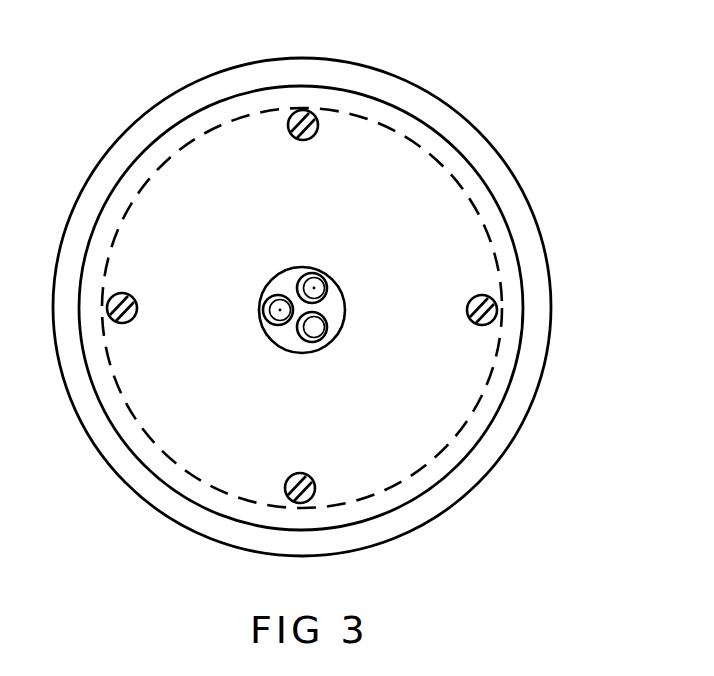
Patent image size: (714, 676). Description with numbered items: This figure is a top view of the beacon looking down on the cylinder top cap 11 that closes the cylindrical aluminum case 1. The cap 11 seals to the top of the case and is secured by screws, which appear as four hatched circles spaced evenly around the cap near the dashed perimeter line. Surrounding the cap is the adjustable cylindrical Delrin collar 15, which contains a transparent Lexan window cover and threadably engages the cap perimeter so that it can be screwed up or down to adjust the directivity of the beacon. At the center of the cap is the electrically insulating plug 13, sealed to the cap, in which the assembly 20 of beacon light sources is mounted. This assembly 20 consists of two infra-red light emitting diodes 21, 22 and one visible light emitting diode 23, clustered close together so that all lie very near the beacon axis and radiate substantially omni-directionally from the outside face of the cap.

The cylindrical aluminum case 1 is at (497, 272).
The cylinder top cap 11 is at (312, 118).
The electrically insulating plug 13 is at (290, 277).
The adjustable cylindrical Delrin collar 15 is at (515, 177).
The assembly of beacon light sources 20 is at (319, 299).
The infra-red light emitting diode 21 is at (317, 337).
The infra-red light emitting diode 22 is at (305, 272).
The visible light emitting diode 23 is at (267, 300).